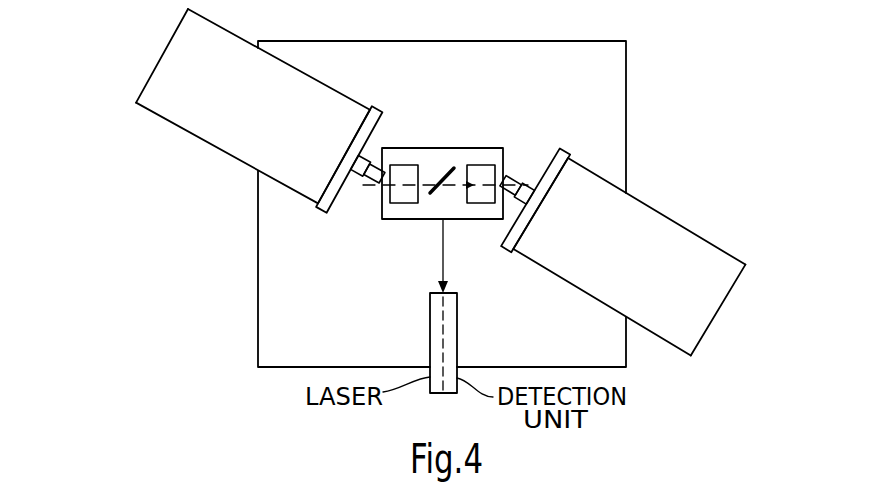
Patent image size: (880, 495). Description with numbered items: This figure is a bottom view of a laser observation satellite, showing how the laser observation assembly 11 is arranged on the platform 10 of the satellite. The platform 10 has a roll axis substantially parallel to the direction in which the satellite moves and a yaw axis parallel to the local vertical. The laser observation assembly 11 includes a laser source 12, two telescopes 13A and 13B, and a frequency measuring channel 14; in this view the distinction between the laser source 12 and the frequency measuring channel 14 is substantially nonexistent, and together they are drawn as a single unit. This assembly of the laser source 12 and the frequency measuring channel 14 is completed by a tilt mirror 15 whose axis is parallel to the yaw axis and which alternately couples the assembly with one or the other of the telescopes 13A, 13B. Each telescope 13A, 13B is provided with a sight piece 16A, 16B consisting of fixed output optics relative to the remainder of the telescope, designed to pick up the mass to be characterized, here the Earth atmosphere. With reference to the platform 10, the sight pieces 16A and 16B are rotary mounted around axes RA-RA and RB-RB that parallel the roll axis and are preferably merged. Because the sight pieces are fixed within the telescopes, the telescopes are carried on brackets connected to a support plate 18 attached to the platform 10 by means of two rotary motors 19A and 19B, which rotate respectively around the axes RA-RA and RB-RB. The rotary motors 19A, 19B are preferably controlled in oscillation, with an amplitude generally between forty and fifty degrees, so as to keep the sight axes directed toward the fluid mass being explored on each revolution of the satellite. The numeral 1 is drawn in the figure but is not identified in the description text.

The reflector plate 1 is at (558, 150).
The platform 10 is at (627, 103).
The laser observation assembly 11 is at (468, 155).
The laser source 12 is at (430, 342).
The first telescope 13A is at (202, 111).
The second telescope 13B is at (663, 260).
The frequency measuring channel 14 is at (457, 320).
The tilt mirror 15 is at (450, 157).
The first sight piece 16A is at (144, 82).
The second sight piece 16B is at (717, 317).
The support plate 18 is at (437, 148).
The first rotary motor 19A is at (400, 210).
The second rotary motor 19B is at (483, 210).
The first rotation axis RA-RA is at (407, 186).
The second rotation axis RB-RB is at (497, 180).